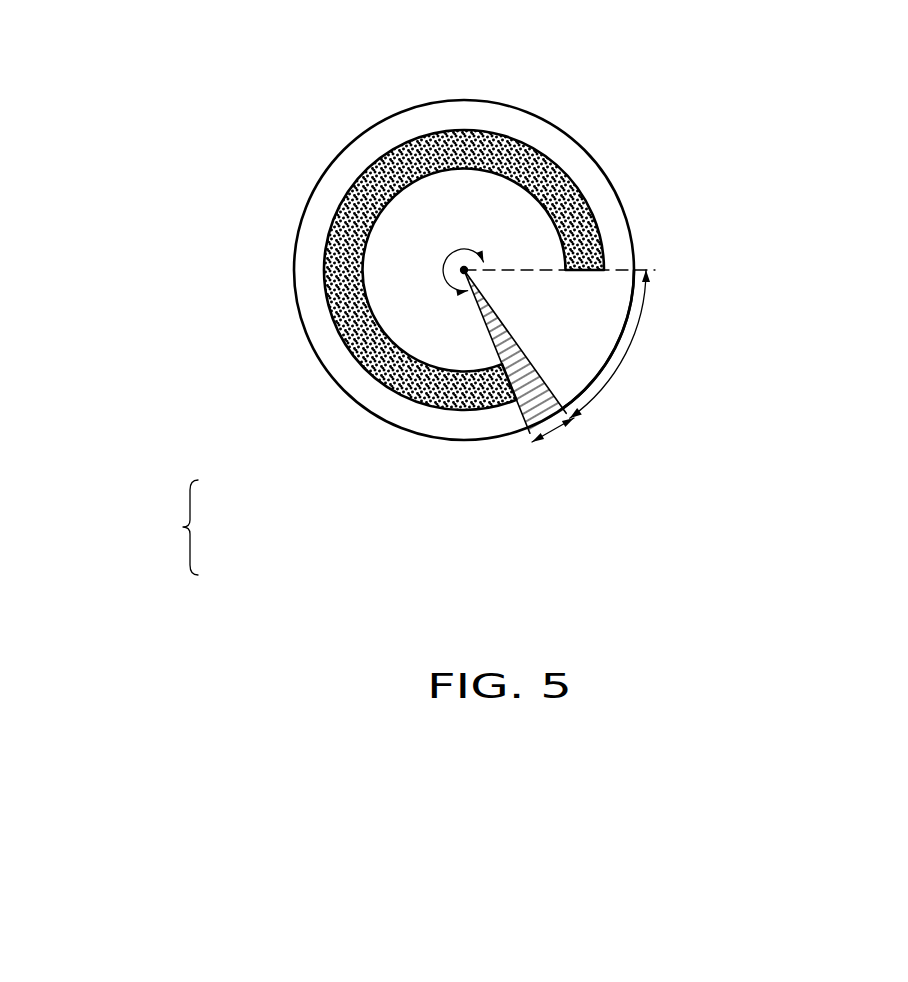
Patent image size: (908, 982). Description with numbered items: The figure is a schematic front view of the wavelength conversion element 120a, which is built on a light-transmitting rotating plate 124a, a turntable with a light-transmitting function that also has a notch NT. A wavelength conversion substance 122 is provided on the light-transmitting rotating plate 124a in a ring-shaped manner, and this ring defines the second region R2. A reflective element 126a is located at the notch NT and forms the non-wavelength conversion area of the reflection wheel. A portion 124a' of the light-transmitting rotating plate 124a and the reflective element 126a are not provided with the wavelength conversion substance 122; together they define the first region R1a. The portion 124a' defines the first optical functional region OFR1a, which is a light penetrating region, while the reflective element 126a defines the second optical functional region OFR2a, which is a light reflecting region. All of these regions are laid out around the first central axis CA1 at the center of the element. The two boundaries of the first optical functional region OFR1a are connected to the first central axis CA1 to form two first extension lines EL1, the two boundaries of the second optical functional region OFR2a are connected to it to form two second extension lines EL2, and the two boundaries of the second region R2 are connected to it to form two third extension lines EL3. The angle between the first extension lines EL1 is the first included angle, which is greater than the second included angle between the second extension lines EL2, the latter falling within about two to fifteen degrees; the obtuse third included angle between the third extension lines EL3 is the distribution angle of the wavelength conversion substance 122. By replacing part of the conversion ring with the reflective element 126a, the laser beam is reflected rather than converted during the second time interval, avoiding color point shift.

The wavelength conversion element 120a is at (838, 582).
The light-transmitting rotating plate 124a is at (464, 241).
The portion of the light-transmitting rotating plate 124a' is at (701, 297).
The wavelength conversion substance 122 is at (464, 213).
The second region R2 is at (461, 148).
The first region R1a is at (205, 527).
The first optical functional region OFR1a is at (590, 290).
The second optical functional region OFR2a is at (513, 372).
The reflective element 126a is at (468, 395).
The first central axis CA1 is at (464, 270).
The first extension lines EL1 is at (648, 268).
The second extension lines EL2 is at (578, 437).
The third extension lines EL3 is at (536, 446).
The notch NT is at (497, 333).